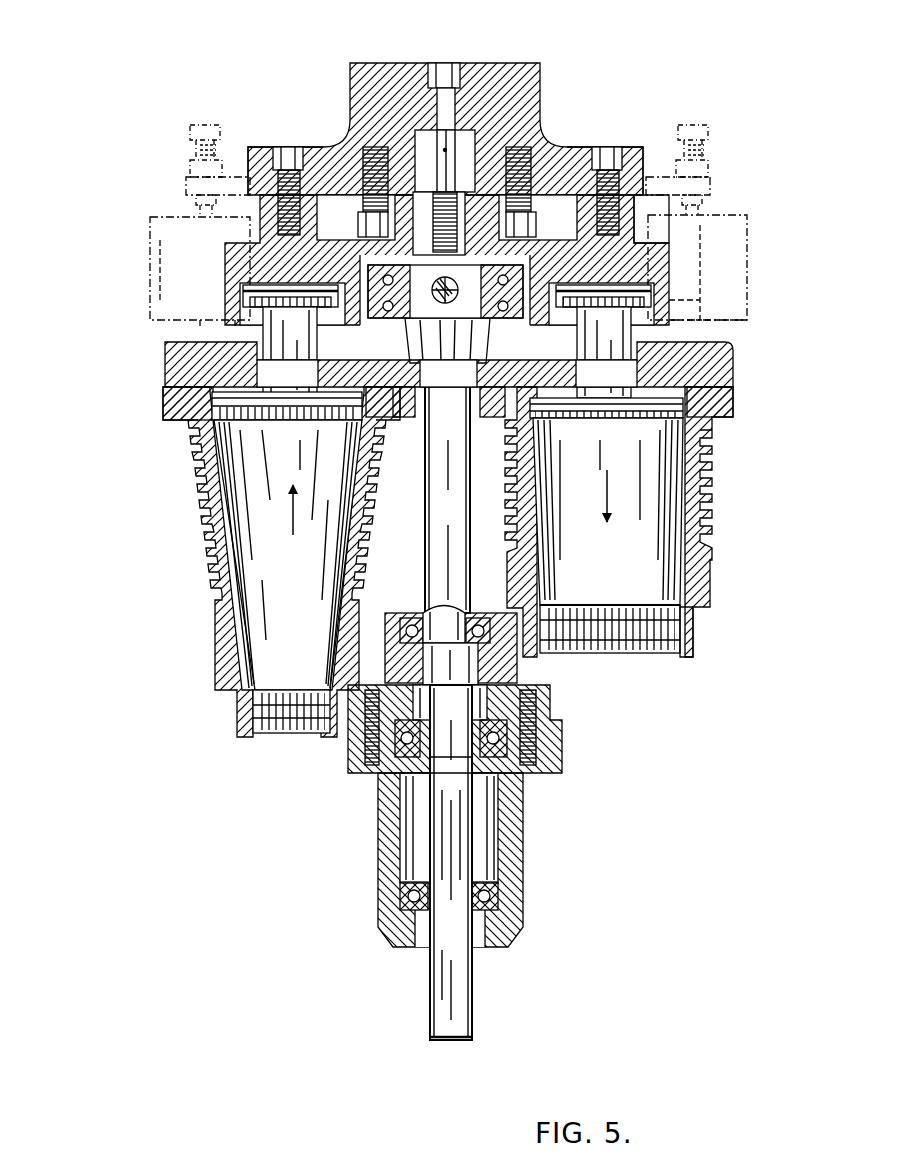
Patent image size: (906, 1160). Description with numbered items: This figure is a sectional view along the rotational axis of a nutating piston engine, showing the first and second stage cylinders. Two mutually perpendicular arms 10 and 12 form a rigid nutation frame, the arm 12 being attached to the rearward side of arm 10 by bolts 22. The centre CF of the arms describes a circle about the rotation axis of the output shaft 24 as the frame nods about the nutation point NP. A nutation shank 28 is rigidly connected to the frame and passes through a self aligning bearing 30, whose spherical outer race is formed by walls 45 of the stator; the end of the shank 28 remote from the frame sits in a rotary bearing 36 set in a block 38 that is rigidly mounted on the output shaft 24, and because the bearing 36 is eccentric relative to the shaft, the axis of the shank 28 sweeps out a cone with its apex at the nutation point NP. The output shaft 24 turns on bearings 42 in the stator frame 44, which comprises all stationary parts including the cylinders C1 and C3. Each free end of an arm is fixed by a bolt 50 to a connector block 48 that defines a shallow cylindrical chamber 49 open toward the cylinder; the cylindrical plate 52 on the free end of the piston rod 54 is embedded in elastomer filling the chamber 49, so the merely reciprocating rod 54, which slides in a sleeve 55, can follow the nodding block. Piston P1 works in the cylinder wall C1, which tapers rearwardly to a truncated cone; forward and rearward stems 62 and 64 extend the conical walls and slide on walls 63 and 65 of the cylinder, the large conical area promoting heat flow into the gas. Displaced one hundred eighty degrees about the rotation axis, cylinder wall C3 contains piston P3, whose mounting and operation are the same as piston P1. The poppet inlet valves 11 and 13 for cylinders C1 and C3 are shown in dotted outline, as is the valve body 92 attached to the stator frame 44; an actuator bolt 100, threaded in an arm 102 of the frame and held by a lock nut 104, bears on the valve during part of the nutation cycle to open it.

The arm 10 is at (567, 163).
The poppet inlet valve 11 is at (690, 275).
The arm 12 is at (385, 165).
The poppet inlet valve 13 is at (210, 230).
The bolts 22 is at (360, 163).
The output shaft 24 is at (455, 825).
The nutation shank 28 is at (468, 150).
The self aligning bearing 30 is at (672, 260).
The rotary bearing 36 is at (412, 648).
The block 38 is at (390, 635).
The bearings 42 is at (390, 752).
The stator frame 44 is at (190, 372).
The walls 45 is at (375, 268).
The connector block 48 is at (668, 265).
The shallow cylindrical chamber 49 is at (700, 318).
The bolt 50 is at (630, 225).
The cylindrical plate 52 is at (600, 300).
The piston rod 54 is at (278, 348).
The sleeve 55 is at (178, 352).
The stem 62 is at (690, 462).
The wall 63 is at (700, 420).
The stem 64 is at (688, 618).
The wall 65 is at (703, 640).
The valve body 92 is at (695, 305).
The actuator bolt 100 is at (210, 160).
The arm 102 is at (190, 185).
The lock nut 104 is at (695, 170).
The centre of arms CF is at (465, 160).
The nutation point NP is at (447, 411).
The first stage cylinder C1 is at (714, 577).
The second stage cylinder C3 is at (192, 468).
The piston P1 is at (606, 525).
The piston P3 is at (287, 562).